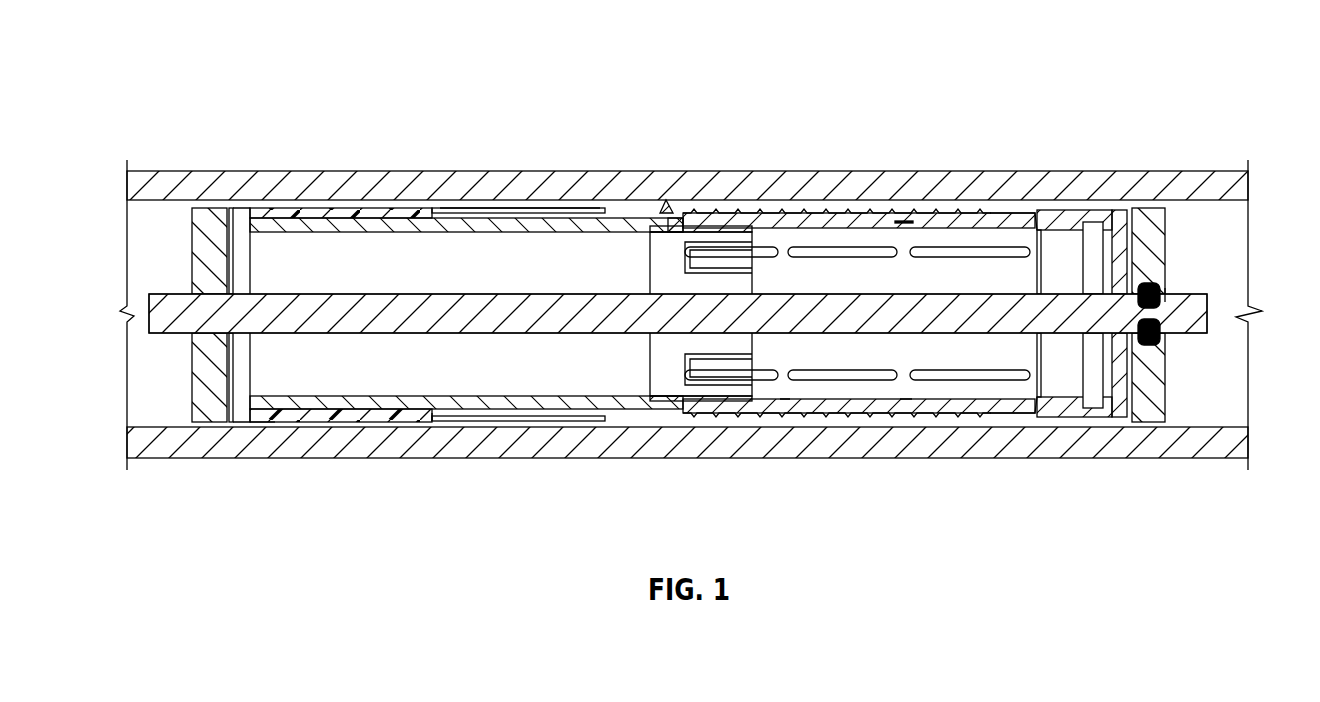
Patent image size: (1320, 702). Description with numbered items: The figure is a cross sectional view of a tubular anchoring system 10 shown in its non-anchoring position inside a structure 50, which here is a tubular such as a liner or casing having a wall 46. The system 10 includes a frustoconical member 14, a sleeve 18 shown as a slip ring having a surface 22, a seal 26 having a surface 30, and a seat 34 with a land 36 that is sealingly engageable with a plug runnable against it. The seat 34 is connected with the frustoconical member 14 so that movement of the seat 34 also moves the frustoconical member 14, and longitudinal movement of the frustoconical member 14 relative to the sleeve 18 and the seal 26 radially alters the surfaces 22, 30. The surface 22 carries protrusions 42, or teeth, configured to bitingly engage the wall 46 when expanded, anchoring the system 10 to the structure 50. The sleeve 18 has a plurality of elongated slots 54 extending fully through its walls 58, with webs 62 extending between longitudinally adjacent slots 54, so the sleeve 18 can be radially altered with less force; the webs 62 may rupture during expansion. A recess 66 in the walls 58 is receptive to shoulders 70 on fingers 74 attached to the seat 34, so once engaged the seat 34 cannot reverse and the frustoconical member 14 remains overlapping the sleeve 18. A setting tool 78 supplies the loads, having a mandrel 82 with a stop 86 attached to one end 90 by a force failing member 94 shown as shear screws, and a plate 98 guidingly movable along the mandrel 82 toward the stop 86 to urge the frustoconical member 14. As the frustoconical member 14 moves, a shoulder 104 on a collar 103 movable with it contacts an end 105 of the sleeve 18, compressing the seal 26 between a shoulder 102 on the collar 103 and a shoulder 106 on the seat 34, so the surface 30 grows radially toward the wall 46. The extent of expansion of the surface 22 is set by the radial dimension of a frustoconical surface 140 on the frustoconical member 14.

The tubular anchoring system 10 is at (243, 55).
The frustoconical member 14 is at (605, 222).
The sleeve 18 is at (945, 212).
The surface 22 is at (897, 211).
The seal 26 is at (278, 213).
The surface 30 is at (360, 206).
The seat 34 is at (240, 222).
The land 36 is at (243, 405).
The protrusions 42 is at (832, 212).
The wall 46 is at (998, 207).
The structure 50 is at (1050, 172).
The slots 54 is at (760, 396).
The walls 58 is at (1038, 412).
The webs 62 is at (781, 406).
The recess 66 is at (1095, 358).
The shoulders 70 is at (745, 398).
The fingers 74 is at (713, 401).
The setting tool 78 is at (1188, 296).
The mandrel 82 is at (1208, 318).
The stop 86 is at (1150, 243).
The end 90 is at (1187, 333).
The force failing member 94 is at (1163, 291).
The plate 98 is at (205, 267).
The shoulder 102 is at (390, 414).
The collar 103 is at (515, 210).
The shoulder 104 is at (432, 212).
The end 105 is at (680, 212).
The shoulder 106 is at (262, 422).
The frustoconical surface 140 is at (666, 206).